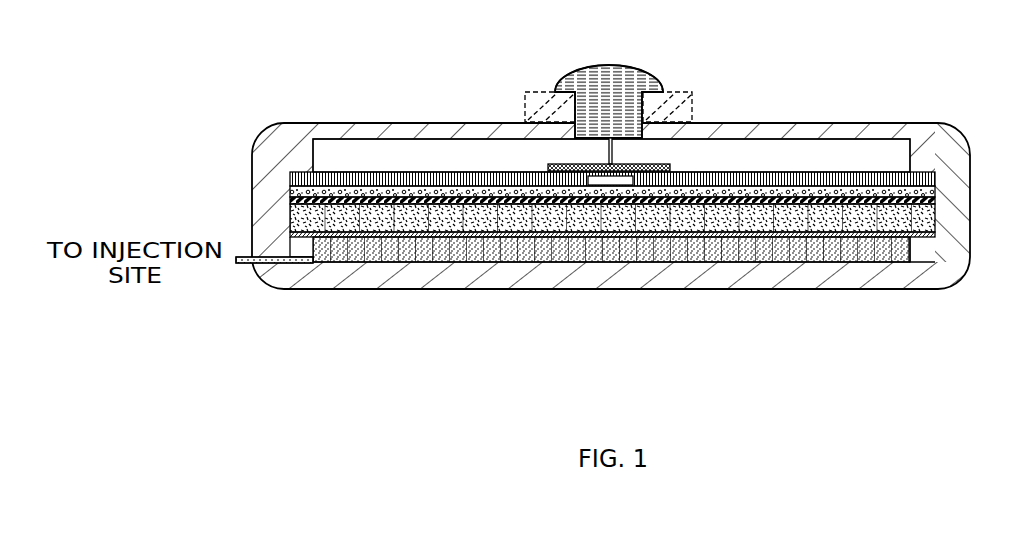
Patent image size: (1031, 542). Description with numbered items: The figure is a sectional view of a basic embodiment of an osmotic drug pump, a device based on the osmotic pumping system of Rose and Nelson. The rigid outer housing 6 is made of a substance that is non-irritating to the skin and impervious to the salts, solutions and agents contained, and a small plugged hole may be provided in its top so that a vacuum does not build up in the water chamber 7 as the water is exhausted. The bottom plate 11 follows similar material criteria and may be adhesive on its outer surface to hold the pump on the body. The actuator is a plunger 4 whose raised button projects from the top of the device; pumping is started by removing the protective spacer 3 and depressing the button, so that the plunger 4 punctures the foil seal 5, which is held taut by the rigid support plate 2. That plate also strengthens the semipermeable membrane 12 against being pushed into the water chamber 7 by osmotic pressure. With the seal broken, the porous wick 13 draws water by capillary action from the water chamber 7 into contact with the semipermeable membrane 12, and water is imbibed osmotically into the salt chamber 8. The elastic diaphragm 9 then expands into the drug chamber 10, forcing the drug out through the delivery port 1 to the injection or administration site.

The delivery port 1 is at (246, 266).
The rigid support plate 2 is at (358, 170).
The protective spacer 3 is at (523, 95).
The plunger 4 is at (615, 64).
The foil seal 5 is at (672, 163).
The outer housing 6 is at (811, 121).
The water chamber 7 is at (894, 157).
The salt chamber 8 is at (940, 203).
The elastic diaphragm 9 is at (920, 240).
The drug chamber 10 is at (667, 266).
The bottom plate 11 is at (428, 292).
The semipermeable membrane 12 is at (288, 205).
The porous wick 13 is at (285, 188).